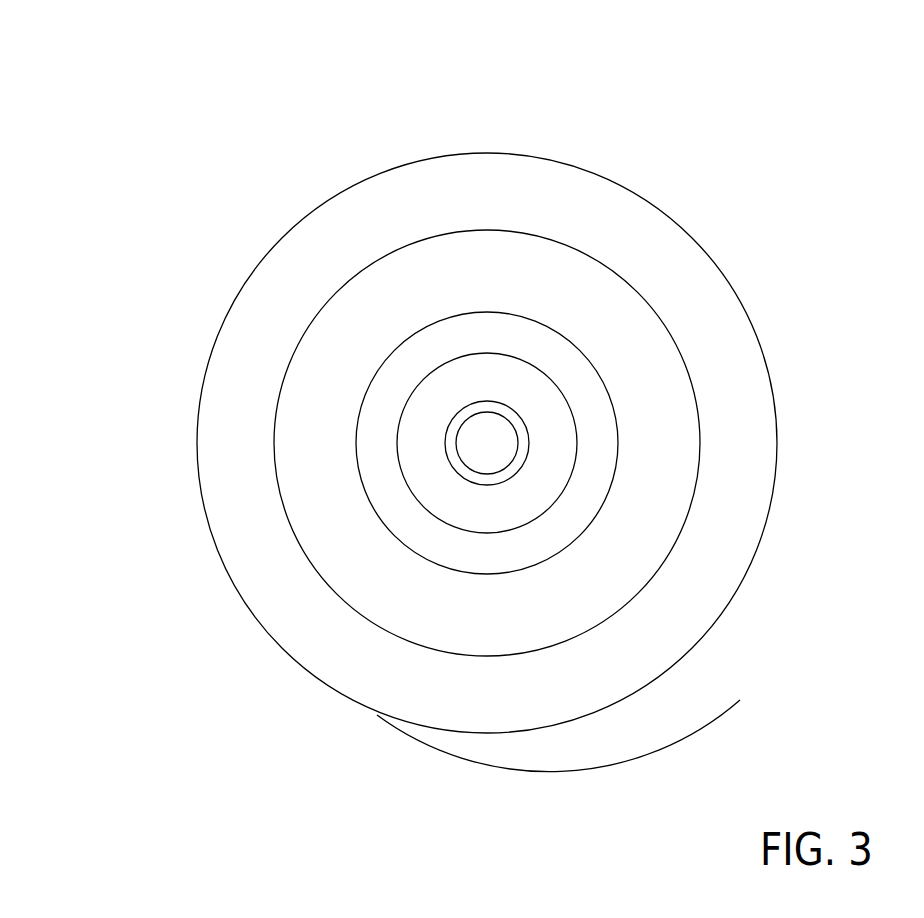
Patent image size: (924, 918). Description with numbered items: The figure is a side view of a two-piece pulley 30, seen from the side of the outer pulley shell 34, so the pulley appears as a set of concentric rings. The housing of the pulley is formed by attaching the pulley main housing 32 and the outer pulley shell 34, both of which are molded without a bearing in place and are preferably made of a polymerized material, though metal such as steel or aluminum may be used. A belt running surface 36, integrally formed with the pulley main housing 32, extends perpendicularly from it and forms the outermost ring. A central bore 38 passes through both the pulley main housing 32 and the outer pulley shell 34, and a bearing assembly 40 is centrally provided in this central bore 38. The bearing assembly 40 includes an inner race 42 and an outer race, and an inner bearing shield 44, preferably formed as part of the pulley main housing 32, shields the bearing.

The two-piece pulley 30 is at (717, 60).
The pulley main housing 32 is at (200, 485).
The outer pulley shell 34 is at (742, 360).
The belt running surface 36 is at (377, 715).
The central bore 38 is at (513, 432).
The bearing assembly 40 is at (463, 413).
The inner race 42 is at (493, 408).
The inner bearing shield 44 is at (543, 417).